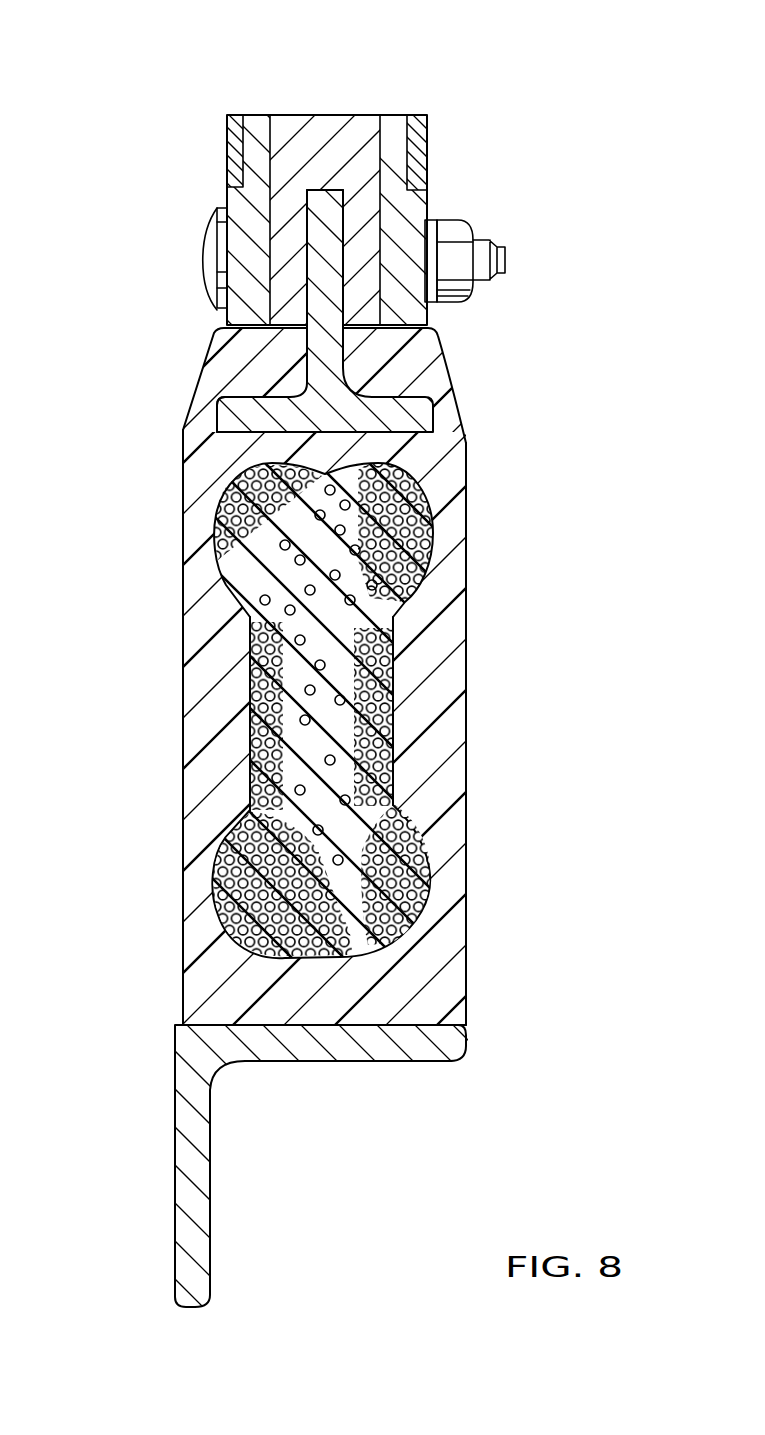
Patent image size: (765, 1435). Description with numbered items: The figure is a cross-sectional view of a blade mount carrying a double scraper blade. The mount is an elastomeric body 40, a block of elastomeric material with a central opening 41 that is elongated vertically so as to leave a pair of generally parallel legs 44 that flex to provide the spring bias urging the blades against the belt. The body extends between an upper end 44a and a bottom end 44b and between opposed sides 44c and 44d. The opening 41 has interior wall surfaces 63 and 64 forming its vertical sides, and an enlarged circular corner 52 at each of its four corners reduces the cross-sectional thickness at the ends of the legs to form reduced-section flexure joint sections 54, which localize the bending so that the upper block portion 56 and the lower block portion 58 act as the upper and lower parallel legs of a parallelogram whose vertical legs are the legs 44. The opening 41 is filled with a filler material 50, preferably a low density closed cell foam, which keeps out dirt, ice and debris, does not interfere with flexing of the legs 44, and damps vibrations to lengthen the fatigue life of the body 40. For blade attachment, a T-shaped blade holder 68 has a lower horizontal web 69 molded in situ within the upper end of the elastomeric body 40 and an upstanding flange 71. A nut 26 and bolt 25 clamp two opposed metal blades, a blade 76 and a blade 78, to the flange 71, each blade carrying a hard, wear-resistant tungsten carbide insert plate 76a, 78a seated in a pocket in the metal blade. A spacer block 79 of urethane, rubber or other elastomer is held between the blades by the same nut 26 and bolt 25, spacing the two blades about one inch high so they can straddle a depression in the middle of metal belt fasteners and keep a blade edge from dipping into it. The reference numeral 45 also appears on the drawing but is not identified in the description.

The spacer block 79 is at (330, 125).
The tungsten carbide insert plate 76a is at (235, 150).
The metal blade 76 is at (240, 215).
The metal blade 78 is at (395, 150).
The tungsten carbide insert plate 78a is at (415, 165).
The upstanding flange 71 is at (320, 226).
The nut 26 is at (458, 232).
The bolt 25 is at (495, 270).
The upper end 44a is at (232, 322).
The upper block portion 56 is at (222, 370).
The T-shaped blade holder 68 is at (372, 410).
The lower horizontal web 69 is at (218, 423).
The filler material 50 is at (348, 528).
The elastomeric body 40 is at (475, 572).
The housing wall 45 is at (447, 630).
The opposed side 44d is at (466, 688).
The legs 44 is at (190, 652).
The interior wall surface 63 is at (250, 731).
The opposed side 44c is at (183, 790).
The interior wall surface 64 is at (393, 765).
The central opening 41 is at (357, 797).
The flexure joint section 54 is at (447, 885).
The enlarged circular corner 52 is at (232, 925).
The lower block portion 58 is at (290, 1000).
The bottom end 44b is at (305, 1030).